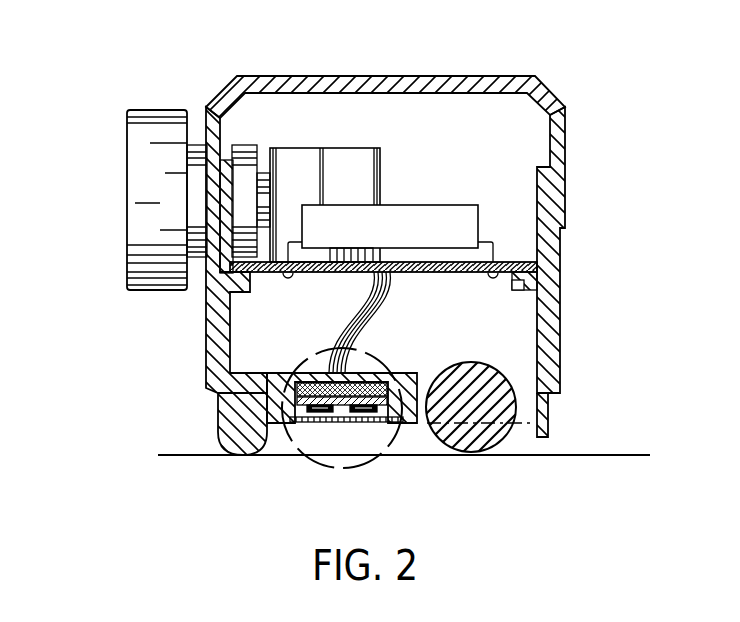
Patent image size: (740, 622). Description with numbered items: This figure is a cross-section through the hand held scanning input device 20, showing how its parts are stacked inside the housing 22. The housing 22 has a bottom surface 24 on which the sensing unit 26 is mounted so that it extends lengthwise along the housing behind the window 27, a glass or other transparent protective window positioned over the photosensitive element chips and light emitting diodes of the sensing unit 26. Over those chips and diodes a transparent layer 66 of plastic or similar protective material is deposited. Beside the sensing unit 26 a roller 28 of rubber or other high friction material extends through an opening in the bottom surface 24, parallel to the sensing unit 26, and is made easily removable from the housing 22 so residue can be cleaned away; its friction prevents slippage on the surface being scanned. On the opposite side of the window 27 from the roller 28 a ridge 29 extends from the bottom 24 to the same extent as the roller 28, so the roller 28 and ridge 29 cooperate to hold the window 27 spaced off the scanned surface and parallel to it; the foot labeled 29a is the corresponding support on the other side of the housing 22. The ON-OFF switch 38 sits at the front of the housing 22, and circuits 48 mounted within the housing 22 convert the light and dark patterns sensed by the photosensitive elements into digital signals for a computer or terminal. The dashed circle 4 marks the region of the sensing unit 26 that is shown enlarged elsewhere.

The hand held scanning input device 20 is at (327, 56).
The housing 22 is at (570, 152).
The ON-OFF switch 38 is at (137, 186).
The circuits 48 is at (417, 186).
The bottom surface 24 is at (400, 412).
The sensing unit 26 is at (288, 402).
The window 27 is at (340, 434).
The transparent layer 66 is at (325, 422).
The detail circle 4 is at (372, 460).
The left foot 29a is at (218, 440).
The ridge 29 is at (536, 424).
The roller 28 is at (490, 454).